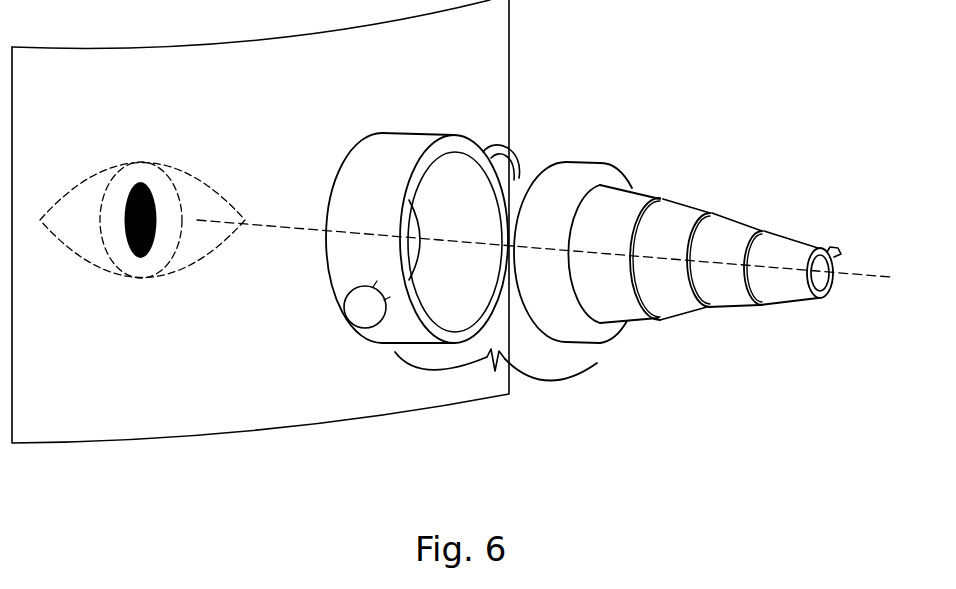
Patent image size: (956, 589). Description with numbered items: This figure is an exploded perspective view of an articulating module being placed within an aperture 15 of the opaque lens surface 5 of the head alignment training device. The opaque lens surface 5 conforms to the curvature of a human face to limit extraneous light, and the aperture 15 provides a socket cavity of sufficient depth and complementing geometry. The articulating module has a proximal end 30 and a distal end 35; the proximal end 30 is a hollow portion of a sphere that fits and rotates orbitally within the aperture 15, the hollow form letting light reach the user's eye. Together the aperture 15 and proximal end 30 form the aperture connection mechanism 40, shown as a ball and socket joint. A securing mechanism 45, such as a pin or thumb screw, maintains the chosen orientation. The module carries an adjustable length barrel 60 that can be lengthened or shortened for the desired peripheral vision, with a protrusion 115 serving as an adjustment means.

The opaque lens surface 5 is at (213, 413).
The aperture 15 is at (375, 177).
The proximal end 30 is at (548, 220).
The distal end 35 is at (817, 300).
The aperture connection mechanism 40 is at (493, 372).
The securing mechanism 45 is at (510, 157).
The adjustable length barrel 60 is at (667, 230).
The protrusion 115 is at (836, 251).